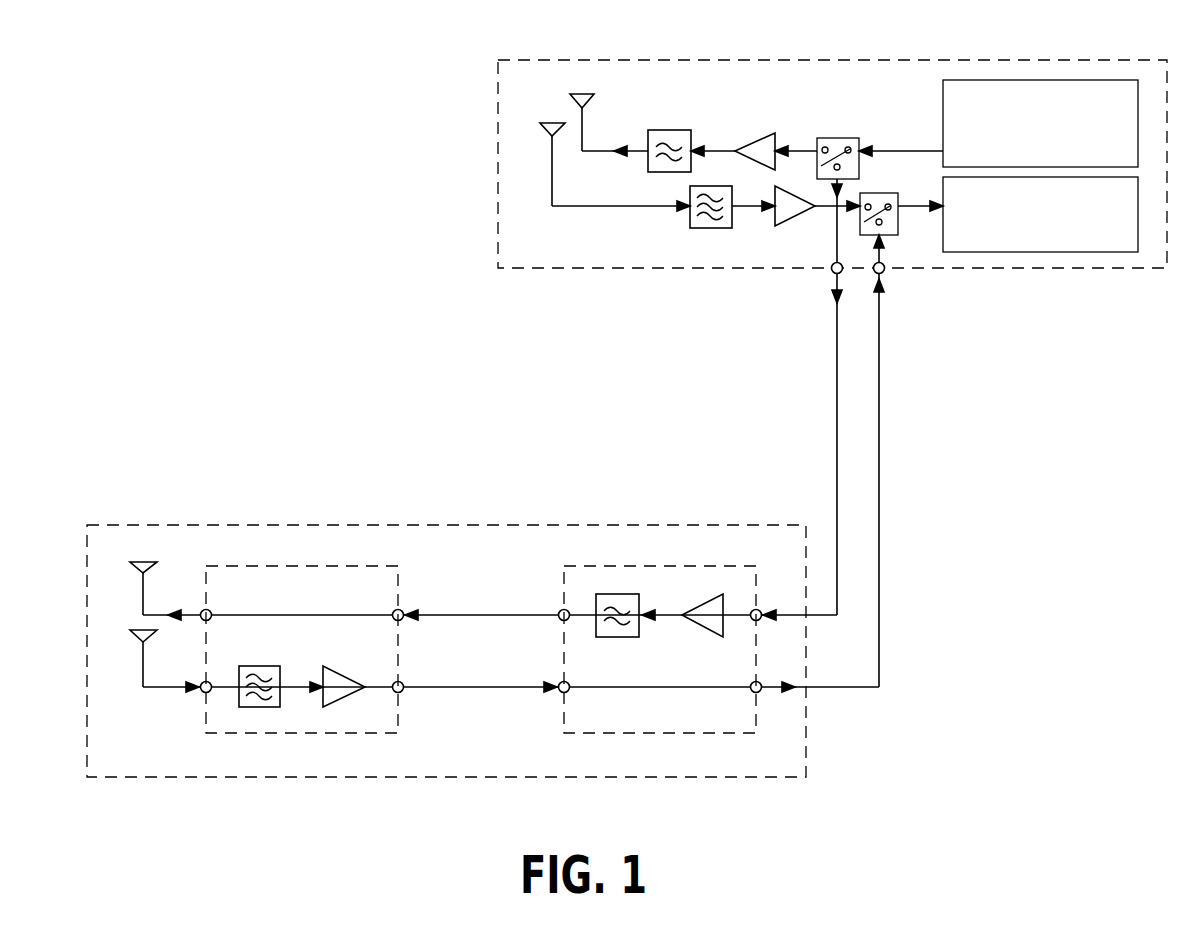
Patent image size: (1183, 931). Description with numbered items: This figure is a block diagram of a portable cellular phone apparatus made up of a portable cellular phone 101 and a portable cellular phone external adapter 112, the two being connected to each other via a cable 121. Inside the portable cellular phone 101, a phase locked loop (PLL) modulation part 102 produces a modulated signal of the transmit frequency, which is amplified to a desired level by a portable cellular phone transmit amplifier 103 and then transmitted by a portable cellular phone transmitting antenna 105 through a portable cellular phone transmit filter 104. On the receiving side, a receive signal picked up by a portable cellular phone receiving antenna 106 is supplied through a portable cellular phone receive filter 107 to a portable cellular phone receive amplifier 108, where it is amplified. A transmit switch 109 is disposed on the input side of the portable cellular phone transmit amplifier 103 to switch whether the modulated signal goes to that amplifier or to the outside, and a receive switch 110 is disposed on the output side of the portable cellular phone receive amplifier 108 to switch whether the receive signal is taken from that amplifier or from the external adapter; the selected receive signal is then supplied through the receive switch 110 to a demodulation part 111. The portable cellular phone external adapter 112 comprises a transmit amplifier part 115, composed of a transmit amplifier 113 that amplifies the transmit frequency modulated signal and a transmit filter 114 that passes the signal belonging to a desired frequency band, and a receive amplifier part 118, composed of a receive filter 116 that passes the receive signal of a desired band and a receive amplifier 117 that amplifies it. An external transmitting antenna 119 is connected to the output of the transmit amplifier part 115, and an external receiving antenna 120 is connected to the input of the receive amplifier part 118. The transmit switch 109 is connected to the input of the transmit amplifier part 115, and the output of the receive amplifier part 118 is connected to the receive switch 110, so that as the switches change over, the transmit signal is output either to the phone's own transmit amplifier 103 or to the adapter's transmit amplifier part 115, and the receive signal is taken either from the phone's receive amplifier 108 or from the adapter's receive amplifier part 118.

The portable cellular phone 101 is at (525, 60).
The phase locked loop (PLL) modulation part 102 is at (1055, 80).
The portable cellular phone transmit amplifier 103 is at (765, 133).
The portable cellular phone transmit filter 104 is at (683, 130).
The portable cellular phone transmitting antenna 105 is at (584, 94).
The portable cellular phone receiving antenna 106 is at (540, 125).
The portable cellular phone receive filter 107 is at (708, 228).
The portable cellular phone receive amplifier 108 is at (782, 228).
The transmit switch 109 is at (843, 138).
The receive switch 110 is at (898, 227).
The demodulation part 111 is at (1050, 253).
The portable cellular phone external adapter 112 is at (113, 525).
The transmit amplifier 113 is at (716, 594).
The transmit filter 114 is at (627, 594).
The transmit amplifier part 115 is at (567, 566).
The receive filter 116 is at (260, 707).
The receive amplifier 117 is at (333, 707).
The receive amplifier part 118 is at (385, 733).
The external transmitting antenna 119 is at (150, 562).
The external receiving antenna 120 is at (135, 643).
The cable 121 is at (837, 441).